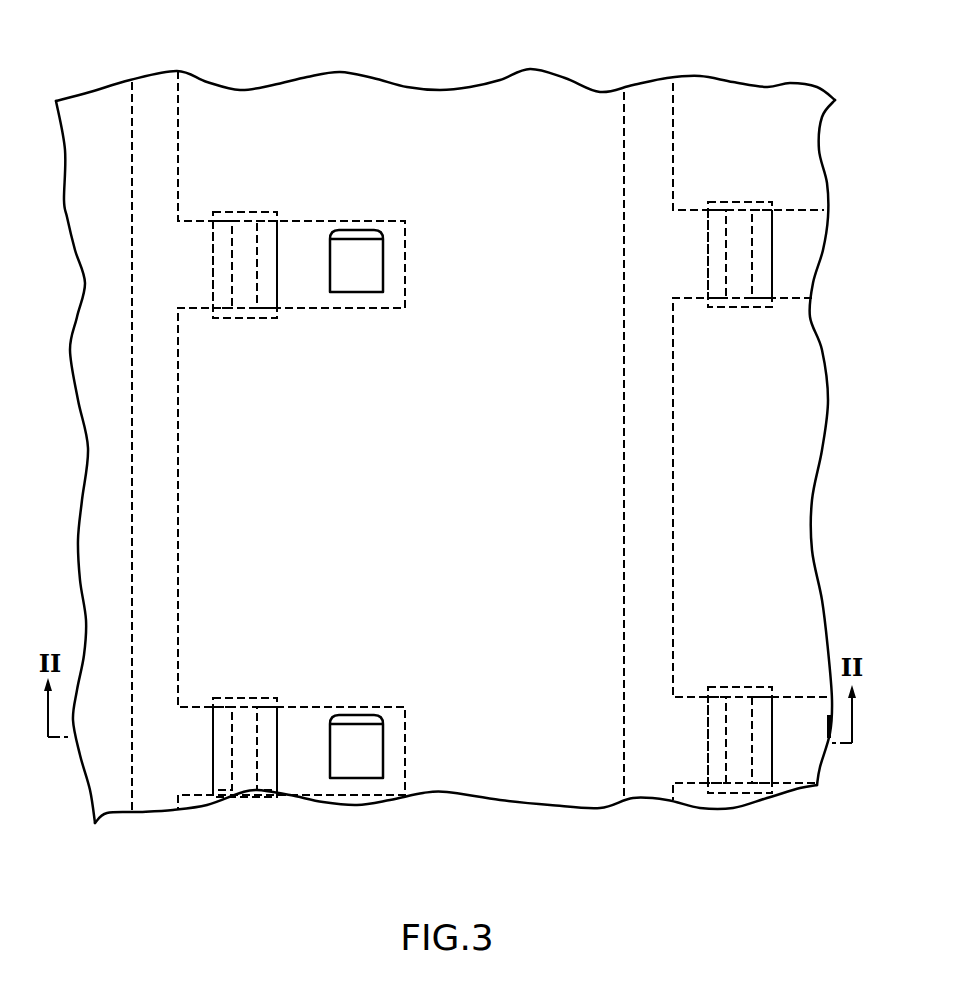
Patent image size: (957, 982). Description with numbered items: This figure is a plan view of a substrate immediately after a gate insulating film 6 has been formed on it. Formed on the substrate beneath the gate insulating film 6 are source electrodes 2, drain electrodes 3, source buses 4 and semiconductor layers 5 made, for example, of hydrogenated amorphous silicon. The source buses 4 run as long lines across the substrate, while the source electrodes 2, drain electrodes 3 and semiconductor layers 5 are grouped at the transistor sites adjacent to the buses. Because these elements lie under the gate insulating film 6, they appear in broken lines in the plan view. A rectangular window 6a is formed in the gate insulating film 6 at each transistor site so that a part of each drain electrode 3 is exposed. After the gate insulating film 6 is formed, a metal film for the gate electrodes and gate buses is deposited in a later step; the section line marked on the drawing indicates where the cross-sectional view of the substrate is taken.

The source electrode 2 is at (195, 243).
The drain electrode 3 is at (302, 243).
The source bus 4 is at (148, 448).
The semiconductor layer 5 is at (242, 243).
The gate insulating film 6 is at (323, 115).
The rectangular window 6a is at (358, 230).